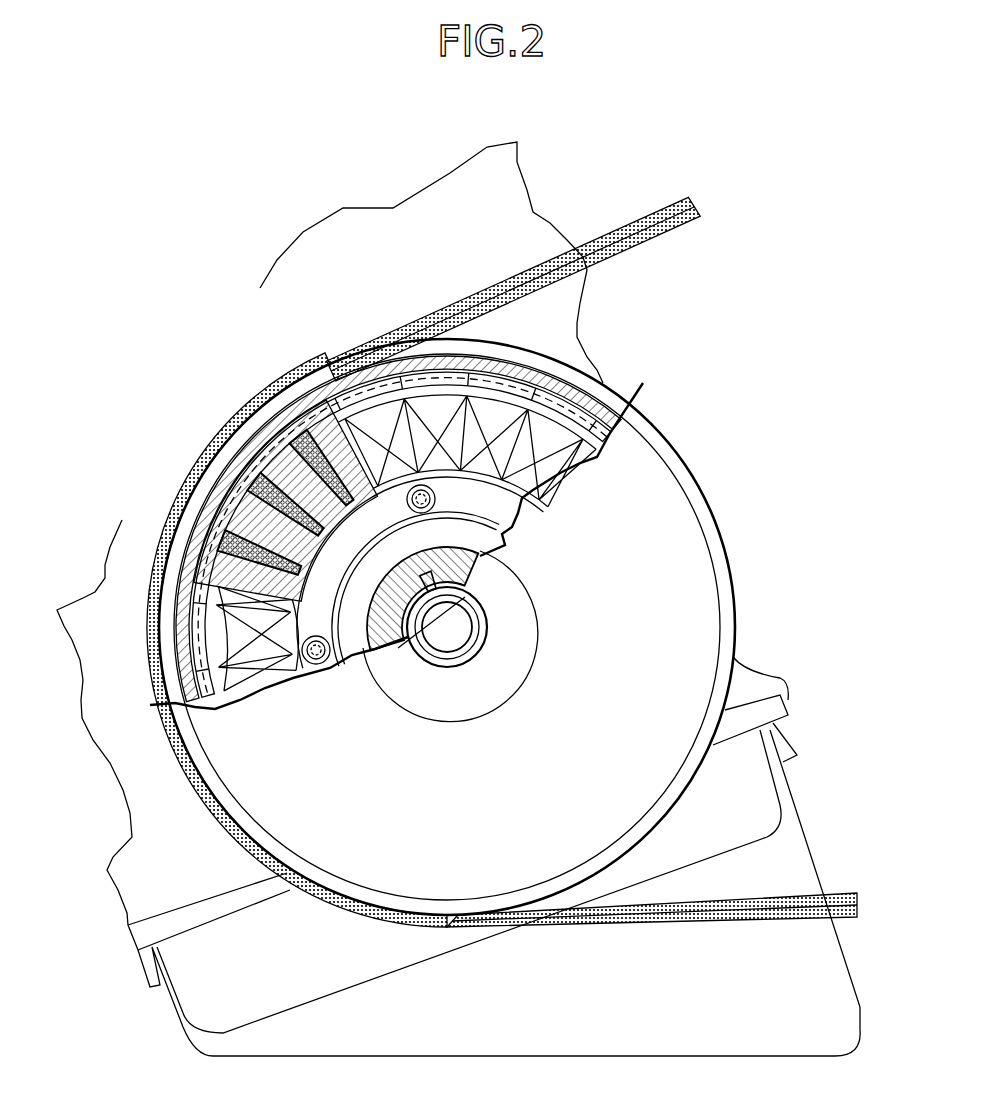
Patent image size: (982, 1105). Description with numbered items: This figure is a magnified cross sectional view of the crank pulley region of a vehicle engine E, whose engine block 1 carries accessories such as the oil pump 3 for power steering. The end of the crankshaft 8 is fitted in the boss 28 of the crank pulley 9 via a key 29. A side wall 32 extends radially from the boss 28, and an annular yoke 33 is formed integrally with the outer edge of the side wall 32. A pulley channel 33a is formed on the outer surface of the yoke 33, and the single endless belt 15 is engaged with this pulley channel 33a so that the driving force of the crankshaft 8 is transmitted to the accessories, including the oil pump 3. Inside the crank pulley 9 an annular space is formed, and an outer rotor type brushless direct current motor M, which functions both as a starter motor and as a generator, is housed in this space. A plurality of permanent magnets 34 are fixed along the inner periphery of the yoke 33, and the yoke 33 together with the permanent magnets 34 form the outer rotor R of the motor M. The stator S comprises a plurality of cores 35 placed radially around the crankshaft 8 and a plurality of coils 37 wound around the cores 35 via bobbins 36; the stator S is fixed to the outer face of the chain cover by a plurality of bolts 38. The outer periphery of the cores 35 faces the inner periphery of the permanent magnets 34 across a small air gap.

The engine block 1 is at (542, 178).
The oil pump 3 is at (148, 686).
The crankshaft 8 is at (415, 648).
The crank pulley 9 is at (495, 340).
The endless belt 15 is at (653, 210).
The boss 28 is at (412, 567).
The key 29 is at (440, 575).
The side wall 32 is at (682, 546).
The yoke 33 is at (348, 378).
The pulley channel 33a is at (662, 432).
The permanent magnets 34 is at (500, 367).
The cores 35 is at (348, 598).
The bobbins 36 is at (285, 405).
The coils 37 is at (445, 446).
The bolts 38 is at (438, 497).
The engine E is at (255, 262).
The brushless direct current motor M is at (212, 424).
The outer rotor R is at (612, 398).
The stator S is at (365, 418).